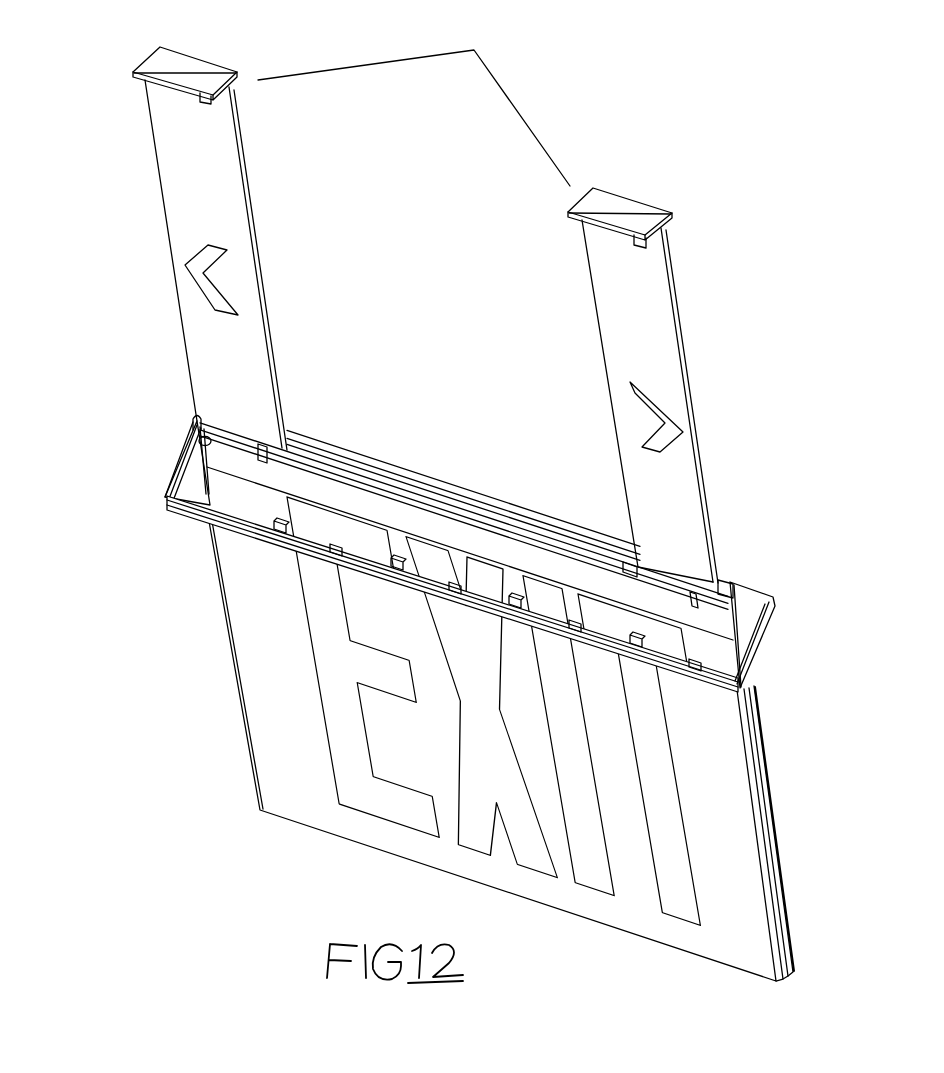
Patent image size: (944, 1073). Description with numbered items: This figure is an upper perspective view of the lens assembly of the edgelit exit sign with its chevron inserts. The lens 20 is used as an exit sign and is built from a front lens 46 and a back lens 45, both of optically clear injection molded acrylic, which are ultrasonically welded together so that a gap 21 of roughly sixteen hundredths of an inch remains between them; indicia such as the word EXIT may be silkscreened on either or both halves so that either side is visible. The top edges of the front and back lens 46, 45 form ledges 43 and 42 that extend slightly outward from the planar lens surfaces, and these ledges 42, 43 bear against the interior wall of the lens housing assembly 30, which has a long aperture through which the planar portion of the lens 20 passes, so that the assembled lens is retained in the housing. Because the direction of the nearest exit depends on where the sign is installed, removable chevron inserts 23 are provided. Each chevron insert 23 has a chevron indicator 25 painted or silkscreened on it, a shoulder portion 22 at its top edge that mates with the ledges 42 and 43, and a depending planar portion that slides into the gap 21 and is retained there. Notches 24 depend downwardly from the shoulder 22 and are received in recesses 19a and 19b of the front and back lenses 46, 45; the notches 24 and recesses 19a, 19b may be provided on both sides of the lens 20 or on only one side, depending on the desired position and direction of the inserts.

The recess 19a is at (262, 452).
The recess 19b is at (696, 593).
The lens 20 is at (268, 716).
The gap 21 is at (383, 480).
The shoulder portion 22 is at (190, 63).
The chevron insert 23 is at (190, 210).
The notch 24 is at (203, 100).
The chevron indicator 25 is at (197, 265).
The lens housing assembly 30 is at (770, 652).
The ledge 42 is at (298, 437).
The ledge 43 is at (432, 500).
The back lens 45 is at (753, 713).
The front lens 46 is at (738, 812).